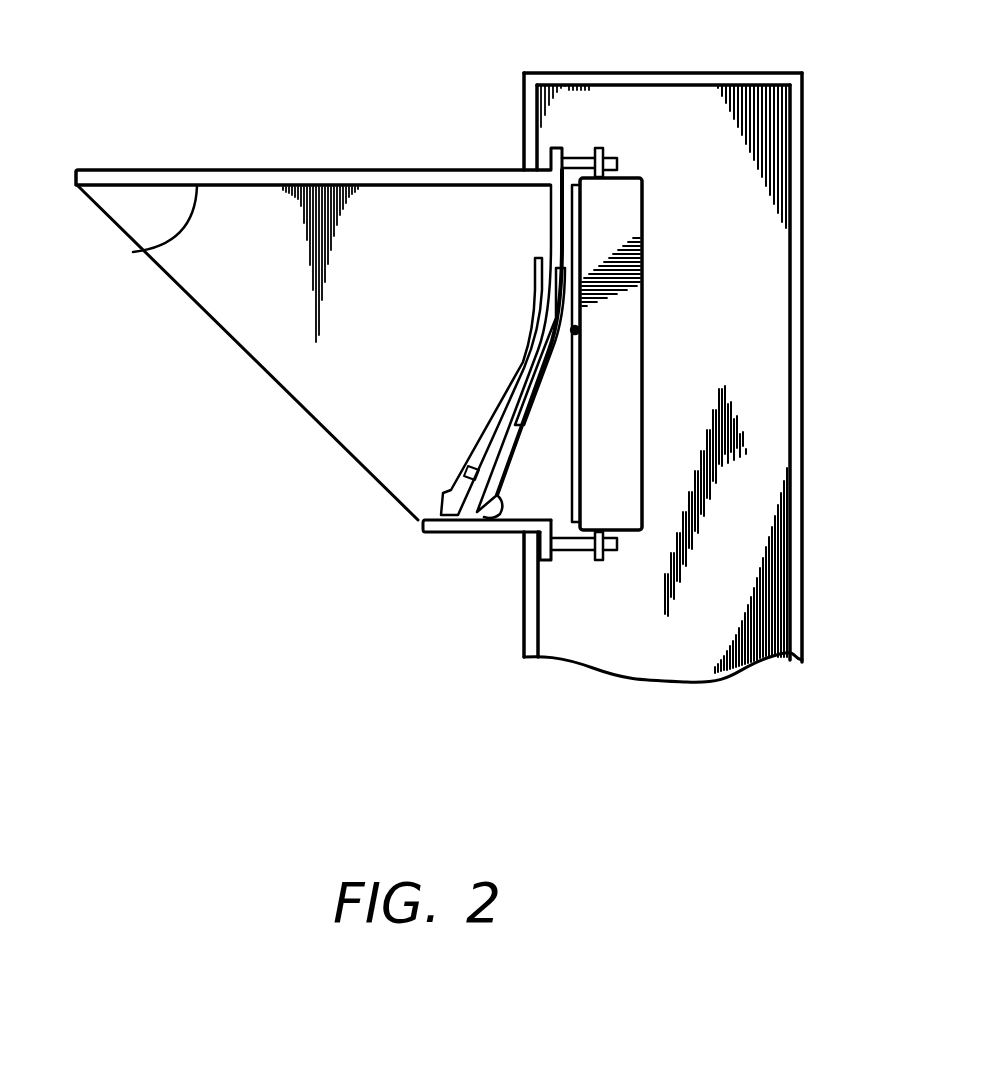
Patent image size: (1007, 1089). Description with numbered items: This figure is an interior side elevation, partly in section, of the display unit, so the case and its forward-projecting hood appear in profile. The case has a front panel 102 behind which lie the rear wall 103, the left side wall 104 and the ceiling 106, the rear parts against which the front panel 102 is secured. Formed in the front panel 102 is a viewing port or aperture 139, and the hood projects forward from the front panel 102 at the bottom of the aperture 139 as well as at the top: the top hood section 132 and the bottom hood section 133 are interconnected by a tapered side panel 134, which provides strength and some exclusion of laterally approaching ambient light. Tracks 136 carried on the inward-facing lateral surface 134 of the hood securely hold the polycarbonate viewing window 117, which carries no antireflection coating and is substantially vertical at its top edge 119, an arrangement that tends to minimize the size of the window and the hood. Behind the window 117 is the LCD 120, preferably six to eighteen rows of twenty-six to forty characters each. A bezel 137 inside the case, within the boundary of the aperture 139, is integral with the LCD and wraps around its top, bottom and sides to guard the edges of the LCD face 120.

The front panel 102 is at (508, 108).
The rear wall 103 is at (803, 192).
The left side wall 104 is at (672, 640).
The ceiling 106 is at (758, 72).
The viewing window 117 is at (546, 238).
The top edge 119 is at (548, 193).
The LCD 120 is at (577, 332).
The top hood section 132 is at (140, 250).
The bottom hood section 133 is at (437, 537).
The tapered side panel 134 is at (543, 458).
The tracks 136 is at (468, 452).
The bezel 137 is at (620, 210).
The viewing aperture 139 is at (521, 170).